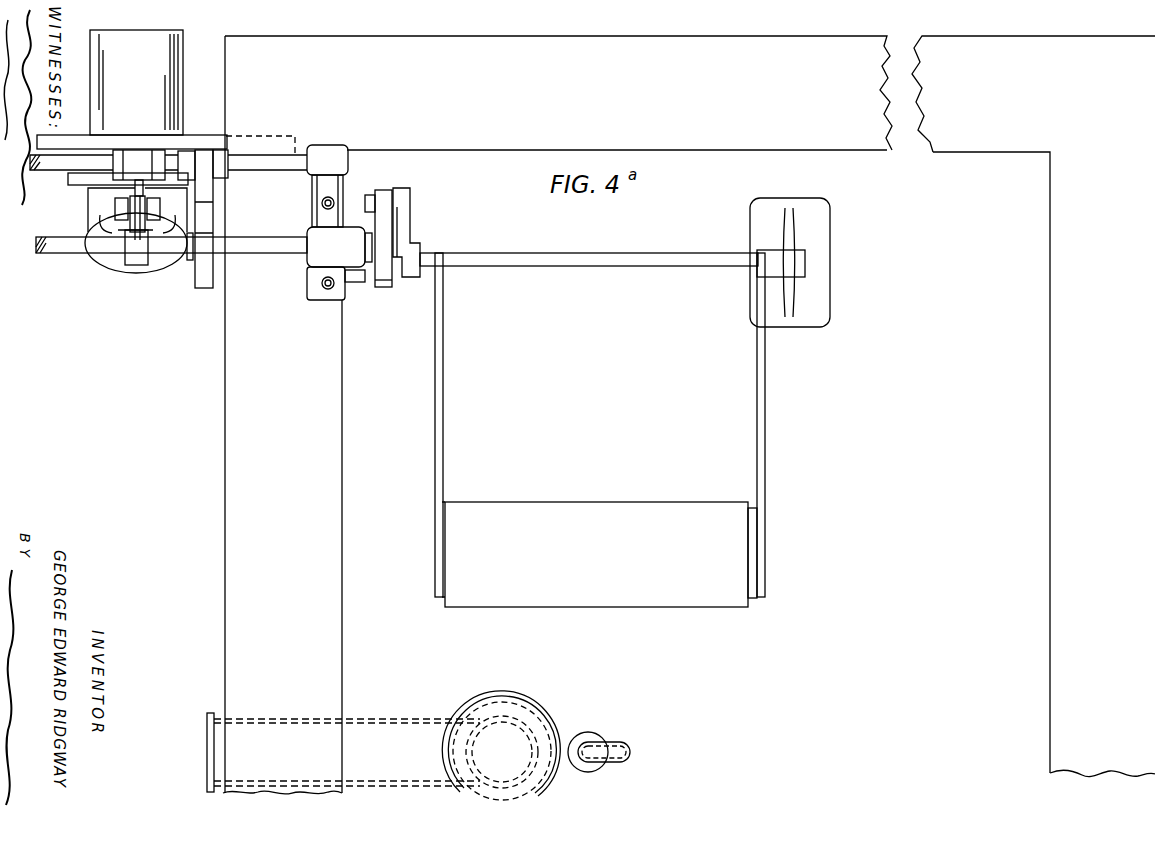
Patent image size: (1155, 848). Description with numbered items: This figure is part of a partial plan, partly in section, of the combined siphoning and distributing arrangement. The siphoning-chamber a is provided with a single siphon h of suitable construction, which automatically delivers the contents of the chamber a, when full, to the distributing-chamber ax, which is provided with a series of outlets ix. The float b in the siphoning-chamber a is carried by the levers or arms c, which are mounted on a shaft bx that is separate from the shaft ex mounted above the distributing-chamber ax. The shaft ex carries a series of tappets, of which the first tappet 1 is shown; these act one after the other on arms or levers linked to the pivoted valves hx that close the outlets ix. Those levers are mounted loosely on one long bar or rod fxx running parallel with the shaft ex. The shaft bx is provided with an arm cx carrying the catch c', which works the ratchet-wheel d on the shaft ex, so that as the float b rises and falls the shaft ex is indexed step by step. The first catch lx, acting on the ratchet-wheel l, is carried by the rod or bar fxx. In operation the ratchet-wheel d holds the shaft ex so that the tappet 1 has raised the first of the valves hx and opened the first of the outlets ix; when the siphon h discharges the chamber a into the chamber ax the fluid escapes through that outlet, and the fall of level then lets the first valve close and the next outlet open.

The siphoning-chamber a is at (373, 443).
The distributing-chamber ax is at (217, 467).
The float b is at (599, 554).
The shaft bx is at (589, 249).
The levers or arms c is at (632, 397).
The catch c' is at (387, 227).
The arm cx is at (412, 232).
The ratchet-wheel d is at (383, 286).
The shaft ex is at (256, 262).
The bar or rod fxx is at (252, 162).
The siphon h is at (519, 738).
The pivoted valves hx is at (163, 266).
The outlets ix is at (136, 82).
The ratchet-wheel l is at (207, 284).
The first catch lx is at (226, 192).
The tappet 1 is at (128, 258).